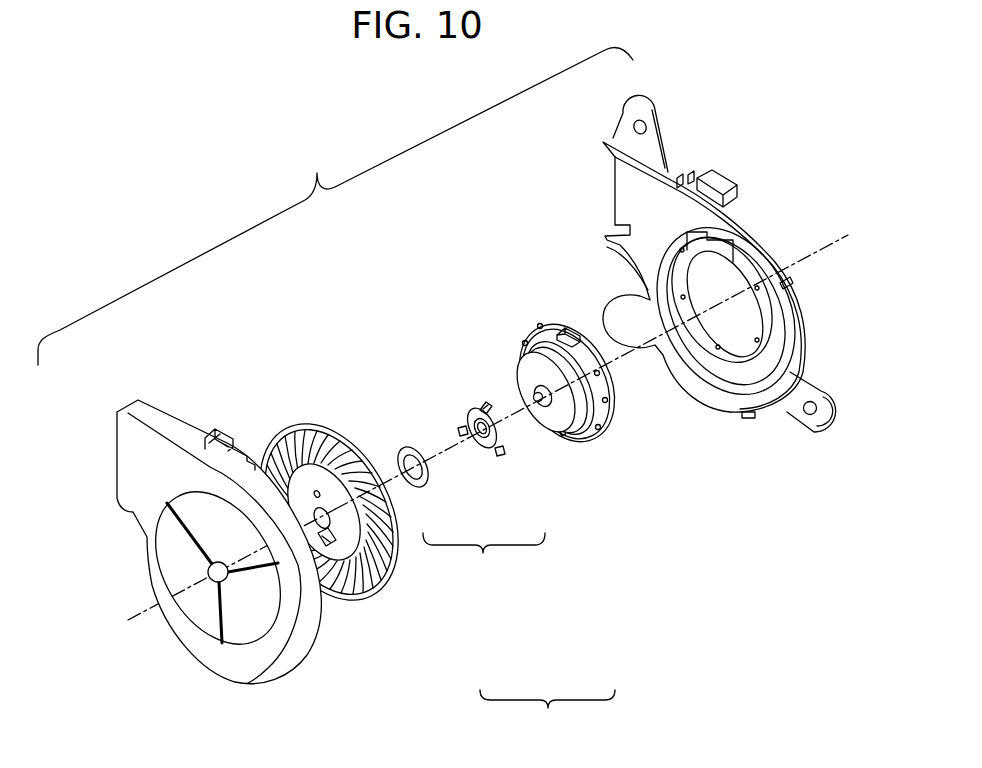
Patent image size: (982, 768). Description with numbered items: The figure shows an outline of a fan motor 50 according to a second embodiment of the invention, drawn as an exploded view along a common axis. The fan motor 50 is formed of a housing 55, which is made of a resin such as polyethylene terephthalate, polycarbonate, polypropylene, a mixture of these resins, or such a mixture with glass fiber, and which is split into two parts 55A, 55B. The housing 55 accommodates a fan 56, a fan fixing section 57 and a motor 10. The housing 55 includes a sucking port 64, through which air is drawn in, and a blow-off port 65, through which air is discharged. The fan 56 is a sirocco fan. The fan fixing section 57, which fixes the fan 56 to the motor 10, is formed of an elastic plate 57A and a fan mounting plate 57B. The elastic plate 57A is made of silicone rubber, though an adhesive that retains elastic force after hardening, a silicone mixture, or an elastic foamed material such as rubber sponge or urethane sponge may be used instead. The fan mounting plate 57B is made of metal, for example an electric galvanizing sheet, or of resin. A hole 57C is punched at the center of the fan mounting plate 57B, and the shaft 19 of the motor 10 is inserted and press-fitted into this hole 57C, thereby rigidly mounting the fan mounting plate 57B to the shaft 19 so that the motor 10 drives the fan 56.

The fan motor 50 is at (332, 167).
The blow-off port 65 is at (112, 442).
The sucking port 64 is at (257, 627).
The fan 56 is at (387, 568).
The fan fixing section 57 is at (484, 559).
The elastic plate 57A is at (425, 482).
The fan mounting plate 57B is at (482, 442).
The hole 57C is at (477, 412).
The shaft 19 is at (518, 368).
The motor 10 is at (590, 437).
The housing 55 is at (547, 716).
The housing part 55A is at (330, 432).
The housing part 55B is at (738, 402).